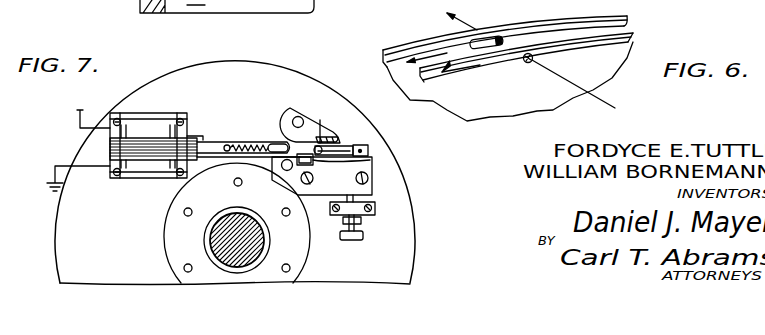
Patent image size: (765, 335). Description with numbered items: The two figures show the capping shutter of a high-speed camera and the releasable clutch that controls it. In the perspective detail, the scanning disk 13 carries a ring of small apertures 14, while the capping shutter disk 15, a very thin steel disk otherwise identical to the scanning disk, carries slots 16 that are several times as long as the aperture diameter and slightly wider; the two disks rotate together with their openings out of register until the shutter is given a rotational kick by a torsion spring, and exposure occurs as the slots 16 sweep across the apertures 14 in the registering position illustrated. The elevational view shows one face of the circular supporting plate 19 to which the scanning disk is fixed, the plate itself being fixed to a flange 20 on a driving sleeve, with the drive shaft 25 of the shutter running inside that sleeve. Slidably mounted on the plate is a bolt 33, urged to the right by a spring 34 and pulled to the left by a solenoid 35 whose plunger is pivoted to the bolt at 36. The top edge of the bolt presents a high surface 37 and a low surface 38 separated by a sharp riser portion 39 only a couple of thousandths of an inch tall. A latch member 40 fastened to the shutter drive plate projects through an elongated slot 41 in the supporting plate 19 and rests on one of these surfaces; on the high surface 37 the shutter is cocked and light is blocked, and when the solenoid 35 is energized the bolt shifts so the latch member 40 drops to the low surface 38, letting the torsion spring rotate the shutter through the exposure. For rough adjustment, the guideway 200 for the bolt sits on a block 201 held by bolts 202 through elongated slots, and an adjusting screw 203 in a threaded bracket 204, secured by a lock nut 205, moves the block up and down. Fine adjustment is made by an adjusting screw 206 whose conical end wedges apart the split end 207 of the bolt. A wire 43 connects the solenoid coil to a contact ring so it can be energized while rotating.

In FIG. 6, the scanning disk 13 is at (617, 50).
In FIG. 6, the apertures 14 is at (525, 62).
In FIG. 6, the capping shutter disk 15 is at (620, 26).
In FIG. 6, the slots 16 is at (488, 39).
In FIG. 7, the supporting plate 19 is at (222, 68).
In FIG. 7, the flange 20 is at (170, 267).
In FIG. 7, the drive shaft 25 is at (213, 240).
In FIG. 7, the bolt 33 is at (248, 146).
In FIG. 7, the spring 34 is at (227, 145).
In FIG. 7, the solenoid 35 is at (147, 162).
In FIG. 7, the pivot 36 is at (200, 135).
In FIG. 7, the high surface 37 is at (266, 142).
In FIG. 7, the low surface 38 is at (348, 151).
In FIG. 7, the riser portion 39 is at (331, 139).
In FIG. 7, the latch member 40 is at (313, 140).
In FIG. 7, the elongated slot 41 is at (293, 118).
In FIG. 7, the wire 43 is at (80, 118).
In FIG. 7, the guideway 200 is at (313, 160).
In FIG. 7, the block 201 is at (313, 190).
In FIG. 7, the bolts 202 is at (373, 178).
In FIG. 7, the adjusting screw 203 is at (363, 233).
In FIG. 7, the threaded bracket 204 is at (376, 208).
In FIG. 7, the lock nut 205 is at (363, 221).
In FIG. 7, the adjusting screw 206 is at (368, 150).
In FIG. 7, the split 207 is at (345, 148).